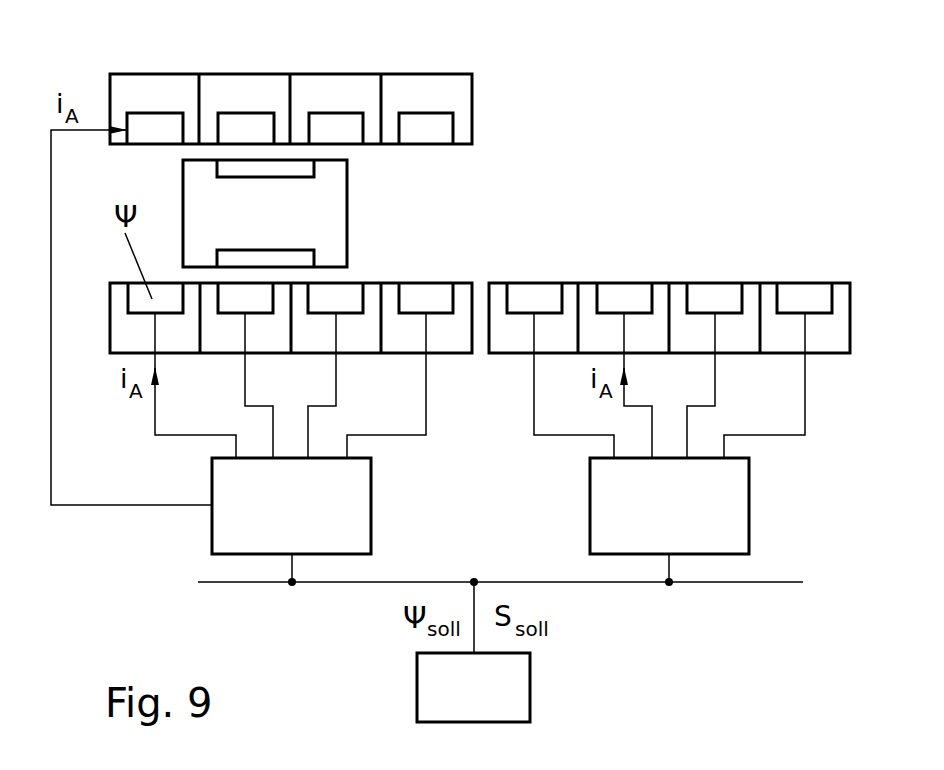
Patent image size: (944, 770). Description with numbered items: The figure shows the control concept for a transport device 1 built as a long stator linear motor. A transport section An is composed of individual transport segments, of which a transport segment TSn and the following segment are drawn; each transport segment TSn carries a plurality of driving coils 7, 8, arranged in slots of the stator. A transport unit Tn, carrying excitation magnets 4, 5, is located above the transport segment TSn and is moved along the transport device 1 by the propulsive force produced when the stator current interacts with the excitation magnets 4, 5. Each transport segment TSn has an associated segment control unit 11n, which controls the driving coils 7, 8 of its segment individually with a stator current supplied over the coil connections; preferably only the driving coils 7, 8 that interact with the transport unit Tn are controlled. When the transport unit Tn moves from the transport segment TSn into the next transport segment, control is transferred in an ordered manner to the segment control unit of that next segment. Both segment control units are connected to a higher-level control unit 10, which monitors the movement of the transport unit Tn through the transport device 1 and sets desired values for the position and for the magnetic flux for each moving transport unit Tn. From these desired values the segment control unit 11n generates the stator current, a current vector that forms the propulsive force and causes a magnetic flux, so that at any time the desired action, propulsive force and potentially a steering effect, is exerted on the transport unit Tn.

The transport device 1 is at (344, 75).
The excitation magnet 4 is at (242, 168).
The excitation magnet 5 is at (295, 257).
The driving coil 7 is at (331, 134).
The driving coil 8 is at (430, 299).
The higher-level control unit 10 is at (490, 695).
The segment control unit 11n is at (325, 518).
The transport unit Tn is at (286, 137).
The transport segment TSn is at (358, 185).
The transport section An is at (607, 245).